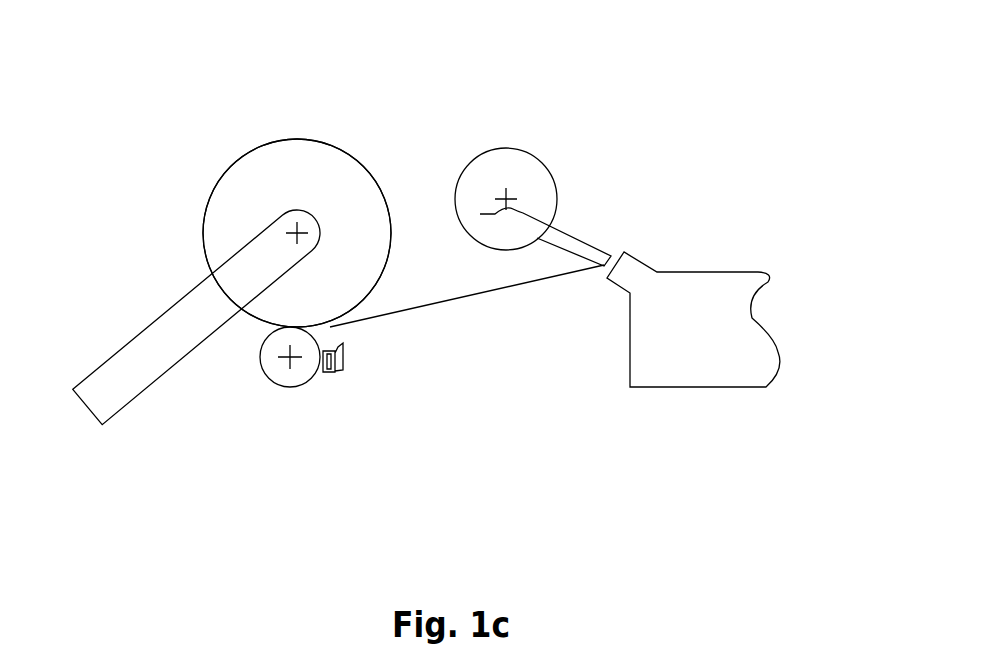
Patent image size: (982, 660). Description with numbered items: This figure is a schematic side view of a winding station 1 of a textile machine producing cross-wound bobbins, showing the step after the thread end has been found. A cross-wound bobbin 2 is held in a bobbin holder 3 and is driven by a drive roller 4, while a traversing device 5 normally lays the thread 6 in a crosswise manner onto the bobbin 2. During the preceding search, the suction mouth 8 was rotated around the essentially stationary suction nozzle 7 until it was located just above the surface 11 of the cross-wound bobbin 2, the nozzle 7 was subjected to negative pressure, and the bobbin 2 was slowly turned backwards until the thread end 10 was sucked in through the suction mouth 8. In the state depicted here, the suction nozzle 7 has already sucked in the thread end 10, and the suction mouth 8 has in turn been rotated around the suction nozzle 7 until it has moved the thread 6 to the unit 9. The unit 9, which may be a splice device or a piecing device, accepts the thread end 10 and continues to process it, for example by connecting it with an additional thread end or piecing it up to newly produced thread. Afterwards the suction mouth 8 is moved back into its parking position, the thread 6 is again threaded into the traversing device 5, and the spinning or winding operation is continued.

The winding station 1 is at (513, 88).
The cross-wound bobbin 2 is at (257, 190).
The bobbin holder 3 is at (190, 335).
The drive roller 4 is at (278, 370).
The traversing device 5 is at (335, 375).
The thread 6 is at (465, 297).
The suction nozzle 7 is at (548, 163).
The suction mouth 8 is at (615, 252).
The unit 9 is at (672, 293).
The thread end 10 is at (492, 213).
The surface 11 is at (307, 138).